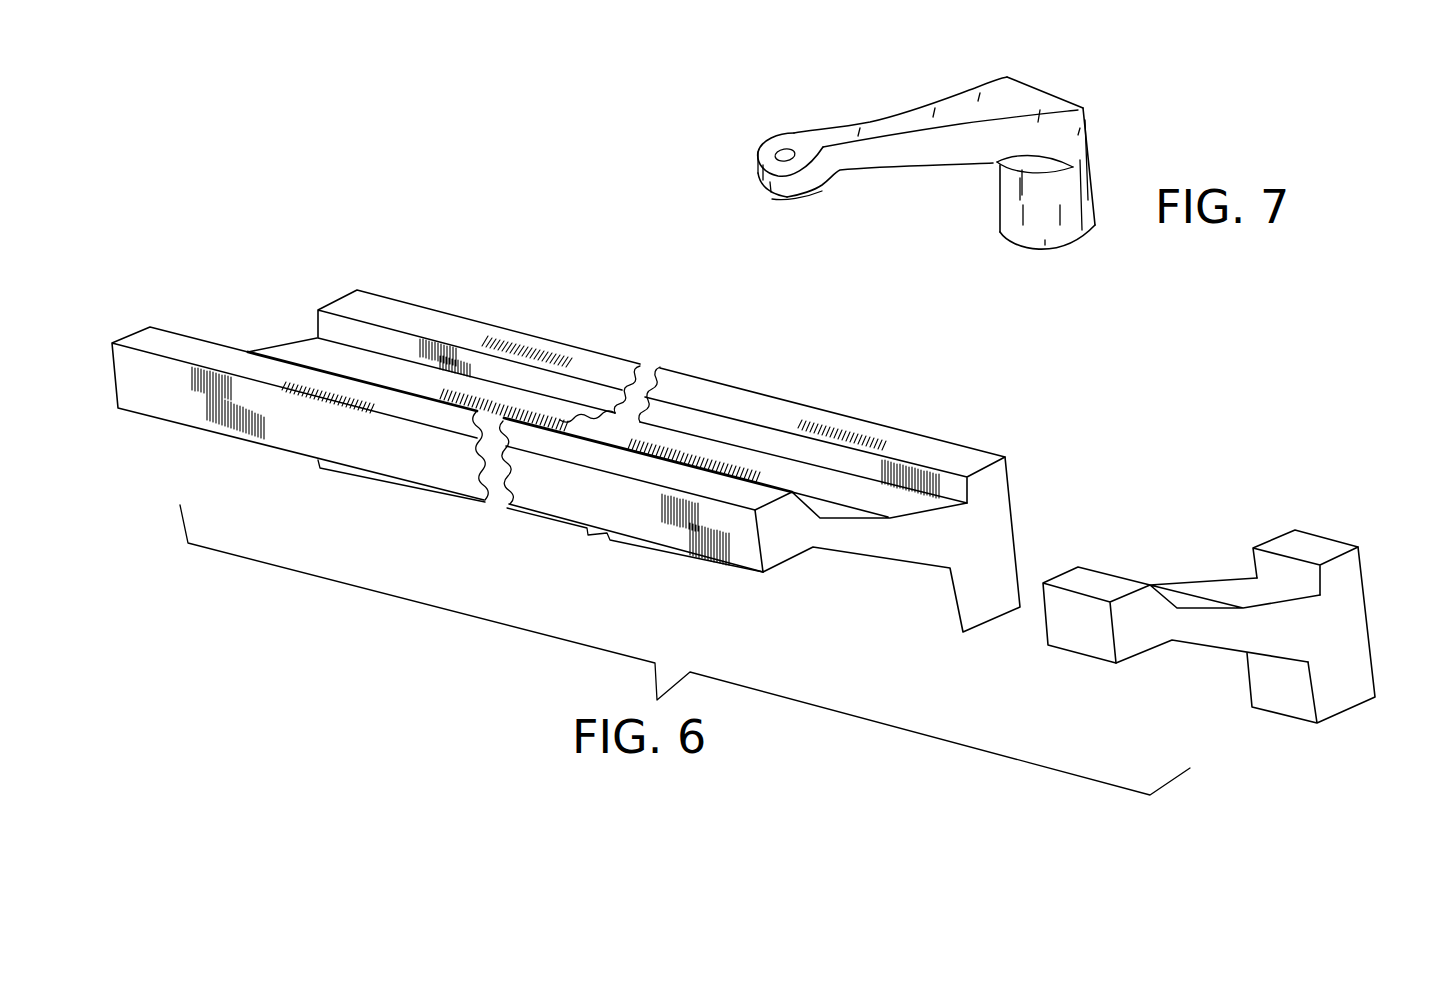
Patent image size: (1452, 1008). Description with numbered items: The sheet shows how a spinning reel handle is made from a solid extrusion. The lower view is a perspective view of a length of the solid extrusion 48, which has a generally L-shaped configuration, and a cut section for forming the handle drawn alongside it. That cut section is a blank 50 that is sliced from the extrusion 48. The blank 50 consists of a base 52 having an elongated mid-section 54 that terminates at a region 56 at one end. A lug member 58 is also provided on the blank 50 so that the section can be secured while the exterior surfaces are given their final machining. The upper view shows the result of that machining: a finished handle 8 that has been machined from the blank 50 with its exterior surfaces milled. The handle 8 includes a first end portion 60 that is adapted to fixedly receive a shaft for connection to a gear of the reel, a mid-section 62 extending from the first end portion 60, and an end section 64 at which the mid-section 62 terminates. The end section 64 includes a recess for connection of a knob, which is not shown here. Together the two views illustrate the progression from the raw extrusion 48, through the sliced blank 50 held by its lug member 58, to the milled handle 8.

In FIG. 7, the handle 8 is at (838, 107).
In FIG. 7, the mid-section 62 is at (897, 118).
In FIG. 7, the end section 64 is at (807, 173).
In FIG. 7, the first end portion 60 is at (1065, 220).
In FIG. 6, the extrusion 48 is at (856, 412).
In FIG. 6, the blank 50 is at (1312, 513).
In FIG. 6, the base 52 is at (1360, 627).
In FIG. 6, the elongated mid-section 54 is at (1215, 590).
In FIG. 6, the region 56 is at (1080, 603).
In FIG. 6, the lug member 58 is at (1290, 543).